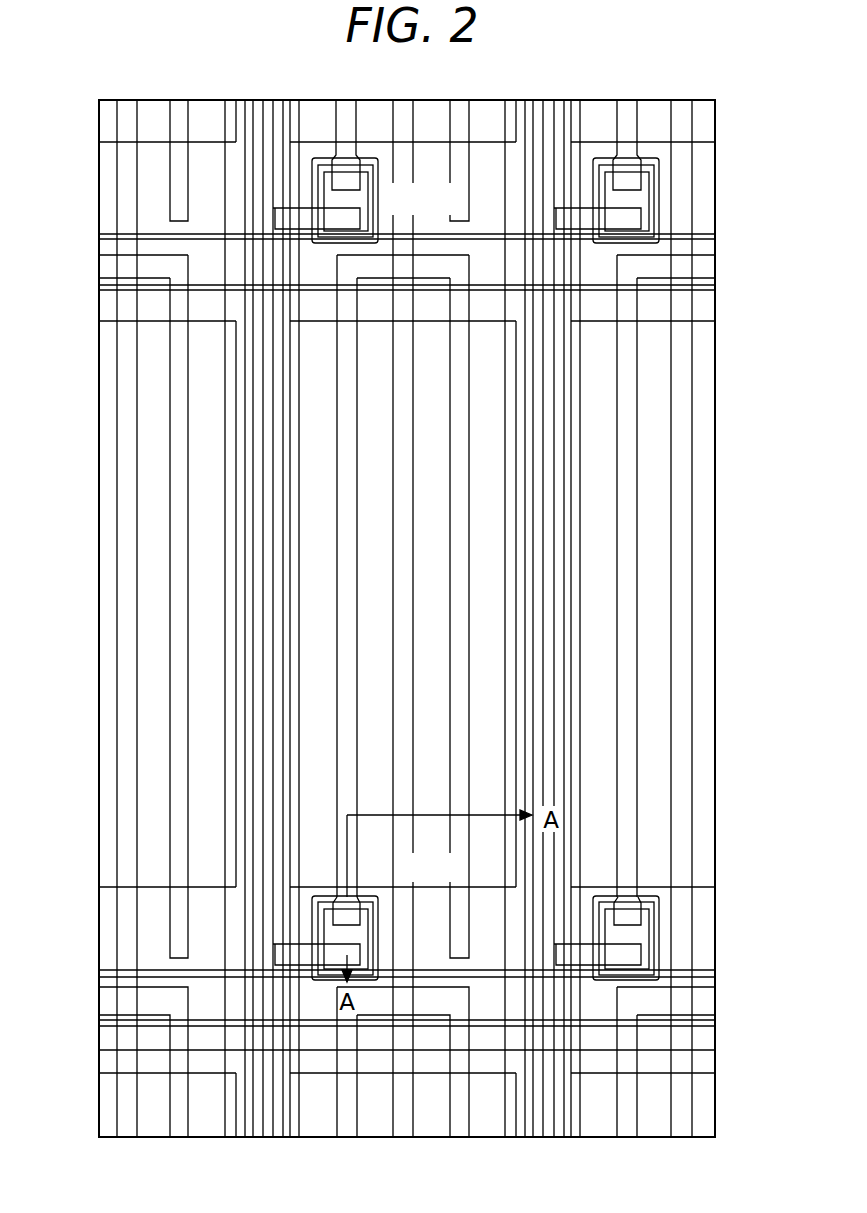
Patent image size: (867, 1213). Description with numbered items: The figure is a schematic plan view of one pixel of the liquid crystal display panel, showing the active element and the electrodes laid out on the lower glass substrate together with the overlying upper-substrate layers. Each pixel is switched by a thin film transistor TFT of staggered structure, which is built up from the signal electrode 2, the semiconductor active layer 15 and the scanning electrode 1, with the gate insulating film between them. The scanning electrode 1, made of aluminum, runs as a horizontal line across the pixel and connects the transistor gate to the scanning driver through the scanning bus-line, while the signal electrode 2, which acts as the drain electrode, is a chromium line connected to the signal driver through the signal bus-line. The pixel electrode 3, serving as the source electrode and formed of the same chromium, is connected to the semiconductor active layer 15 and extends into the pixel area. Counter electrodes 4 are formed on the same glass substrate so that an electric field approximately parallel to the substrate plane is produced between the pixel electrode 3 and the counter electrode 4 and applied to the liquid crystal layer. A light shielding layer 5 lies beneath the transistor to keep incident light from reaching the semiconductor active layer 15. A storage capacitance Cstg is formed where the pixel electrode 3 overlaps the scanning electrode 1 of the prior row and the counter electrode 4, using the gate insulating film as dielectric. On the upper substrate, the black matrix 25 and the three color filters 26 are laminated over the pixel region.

The scanning electrode 1 is at (207, 1017).
The signal electrode 2 is at (276, 613).
The pixel electrode 3 is at (356, 712).
The counter electrode 4 is at (303, 505).
The light shielding layer 5 is at (390, 915).
The semiconductor active layer 15 is at (238, 1028).
The black matrix 25 is at (516, 762).
The color filters 26 is at (540, 1138).
The storage capacitance Cstg is at (428, 247).
The thin film transistor TFT is at (377, 893).